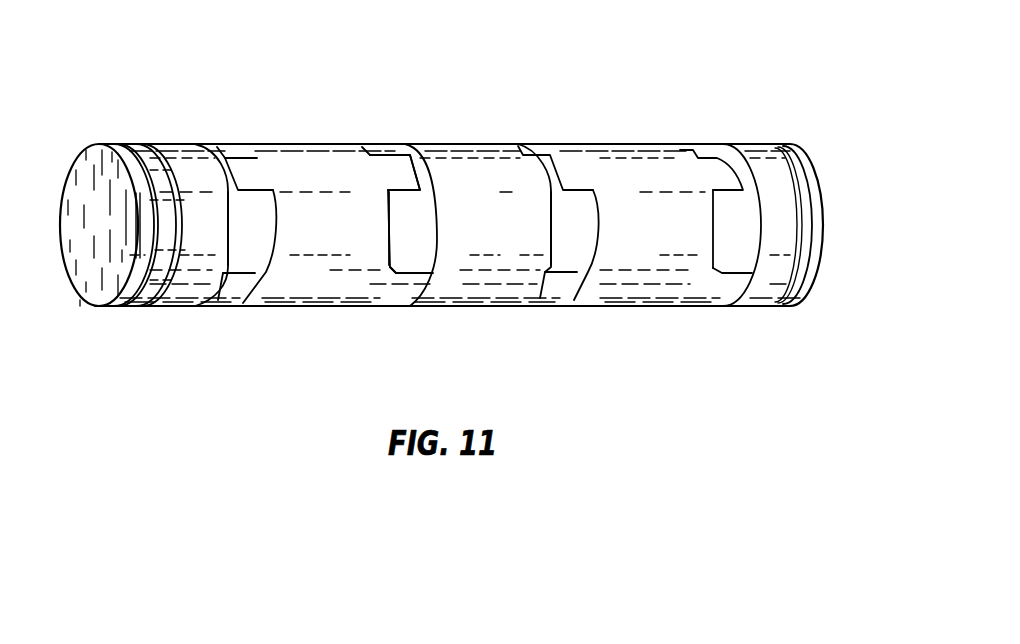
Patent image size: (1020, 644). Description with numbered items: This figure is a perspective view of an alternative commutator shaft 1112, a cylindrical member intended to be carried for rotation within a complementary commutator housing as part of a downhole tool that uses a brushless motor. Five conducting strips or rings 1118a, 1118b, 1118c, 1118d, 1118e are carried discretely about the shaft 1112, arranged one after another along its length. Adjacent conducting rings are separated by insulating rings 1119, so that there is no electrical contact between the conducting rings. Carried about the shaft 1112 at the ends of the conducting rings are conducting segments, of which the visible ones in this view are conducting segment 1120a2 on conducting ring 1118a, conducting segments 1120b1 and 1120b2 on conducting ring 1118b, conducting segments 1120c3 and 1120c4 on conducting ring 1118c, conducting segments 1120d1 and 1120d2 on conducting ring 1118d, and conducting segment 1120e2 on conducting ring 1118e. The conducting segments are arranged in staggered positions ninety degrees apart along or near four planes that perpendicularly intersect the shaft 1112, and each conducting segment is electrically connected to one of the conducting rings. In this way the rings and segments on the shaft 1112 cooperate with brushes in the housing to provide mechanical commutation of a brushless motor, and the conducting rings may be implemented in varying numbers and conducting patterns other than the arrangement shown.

The commutator shaft 1112 is at (644, 124).
The conducting ring 1118a is at (180, 148).
The conducting ring 1118b is at (310, 150).
The conducting ring 1118c is at (500, 150).
The conducting ring 1118d is at (622, 150).
The conducting ring 1118e is at (752, 150).
The insulating ring 1119 is at (250, 250).
The conducting segment 1120a2 is at (227, 292).
The conducting segment 1120b1 is at (244, 170).
The conducting segment 1120b2 is at (392, 173).
The conducting segment 1120c3 is at (408, 290).
The conducting segment 1120c4 is at (553, 286).
The conducting segment 1120d1 is at (568, 150).
The conducting segment 1120d2 is at (716, 150).
The conducting segment 1120e2 is at (736, 284).